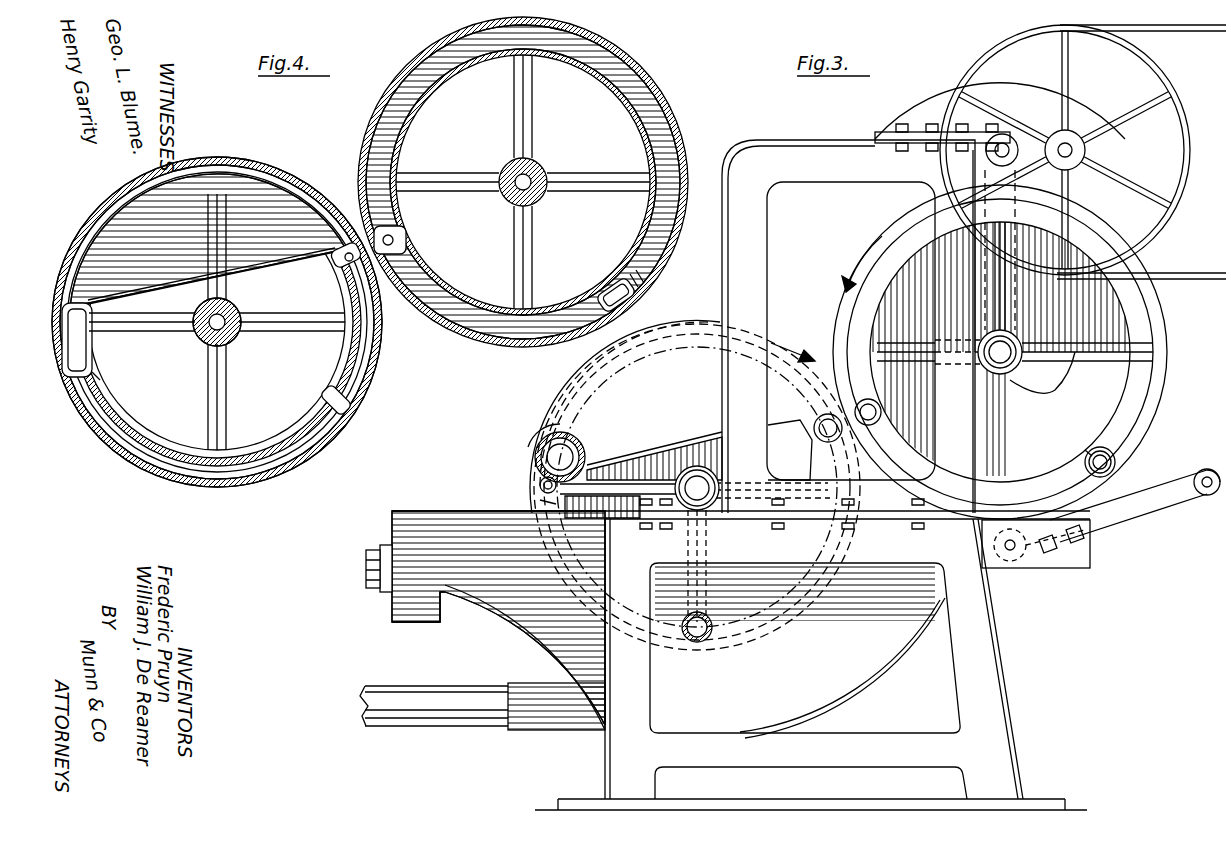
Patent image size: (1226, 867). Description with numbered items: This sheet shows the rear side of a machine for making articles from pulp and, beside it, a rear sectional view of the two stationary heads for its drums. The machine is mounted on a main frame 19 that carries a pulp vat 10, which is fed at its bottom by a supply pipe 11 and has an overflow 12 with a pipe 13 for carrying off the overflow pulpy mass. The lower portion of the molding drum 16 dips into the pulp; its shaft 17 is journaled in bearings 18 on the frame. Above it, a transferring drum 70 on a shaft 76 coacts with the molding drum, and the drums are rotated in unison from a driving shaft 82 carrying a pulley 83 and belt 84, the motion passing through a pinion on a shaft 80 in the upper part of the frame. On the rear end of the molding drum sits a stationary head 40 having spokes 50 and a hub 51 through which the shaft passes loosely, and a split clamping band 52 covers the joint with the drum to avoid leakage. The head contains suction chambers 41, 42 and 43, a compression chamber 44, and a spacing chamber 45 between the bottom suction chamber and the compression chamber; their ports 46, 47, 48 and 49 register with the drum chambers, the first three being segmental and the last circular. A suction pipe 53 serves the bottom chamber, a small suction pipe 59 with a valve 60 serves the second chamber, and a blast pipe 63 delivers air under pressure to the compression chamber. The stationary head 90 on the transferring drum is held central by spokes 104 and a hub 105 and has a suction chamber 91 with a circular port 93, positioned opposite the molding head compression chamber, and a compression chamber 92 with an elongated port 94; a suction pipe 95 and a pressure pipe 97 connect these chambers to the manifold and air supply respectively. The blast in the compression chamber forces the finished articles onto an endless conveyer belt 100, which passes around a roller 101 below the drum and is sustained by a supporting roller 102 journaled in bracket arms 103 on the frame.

In FIG. 3, the pulp vat 10 is at (484, 524).
In FIG. 3, the supply pipe 11 is at (433, 720).
In FIG. 3, the overflow 12 is at (410, 598).
In FIG. 3, the overflow pipe 13 is at (360, 562).
In FIG. 3, the molding drum 16 is at (650, 462).
In FIG. 3, the shaft 17 is at (703, 486).
In FIG. 3, the bearings 18 is at (712, 520).
In FIG. 3, the main frame 19 is at (852, 152).
In FIG. 4, the stationary head 40 is at (281, 171).
In FIG. 3, the stationary head 40 is at (608, 362).
In FIG. 4, the suction chamber 41 is at (272, 467).
In FIG. 4, the suction chamber 42 is at (93, 348).
In FIG. 4, the suction chamber 43 is at (104, 262).
In FIG. 3, the suction chamber 43 is at (648, 375).
In FIG. 4, the compression chamber 44 is at (340, 268).
In FIG. 4, the spacing chamber 45 is at (362, 352).
In FIG. 4, the port 46 is at (231, 466).
In FIG. 3, the port 46 is at (745, 630).
In FIG. 4, the port 47 is at (96, 373).
In FIG. 3, the port 47 is at (536, 504).
In FIG. 4, the port 48 is at (100, 225).
In FIG. 3, the port 48 is at (579, 384).
In FIG. 4, the port 49 is at (316, 262).
In FIG. 3, the port 49 is at (778, 362).
In FIG. 3, the spokes 50 is at (695, 455).
In FIG. 3, the hub 51 is at (706, 472).
In FIG. 3, the split clamping band 52 is at (534, 432).
In FIG. 3, the suction pipe 53 is at (692, 641).
In FIG. 3, the suction pipe 59 is at (540, 483).
In FIG. 3, the valve 60 is at (578, 449).
In FIG. 3, the blast pipe 63 is at (812, 445).
In FIG. 3, the transferring drum 70 is at (1110, 403).
In FIG. 3, the shaft 76 is at (1022, 344).
In FIG. 3, the shaft 80 is at (1000, 142).
In FIG. 3, the driving shaft 82 is at (1088, 150).
In FIG. 3, the pulley 83 is at (1190, 160).
In FIG. 3, the belt 84 is at (1170, 30).
In FIG. 4, the stationary head 90 is at (523, 182).
In FIG. 3, the stationary head 90 is at (1160, 363).
In FIG. 4, the suction chamber 91 is at (402, 232).
In FIG. 4, the compression chamber 92 is at (601, 293).
In FIG. 4, the port 93 is at (395, 240).
In FIG. 4, the port 94 is at (622, 279).
In FIG. 3, the port 94 is at (1094, 453).
In FIG. 3, the suction pipe 95 is at (868, 400).
In FIG. 3, the pipe 97 is at (1110, 450).
In FIG. 3, the endless conveyer belt 100 is at (1206, 476).
In FIG. 3, the roller 101 is at (1014, 552).
In FIG. 3, the supporting roller 102 is at (1208, 497).
In FIG. 3, the bracket arms 103 is at (1122, 516).
In FIG. 4, the spokes 104 is at (518, 128).
In FIG. 3, the spokes 104 is at (1103, 350).
In FIG. 4, the hub 105 is at (520, 157).
In FIG. 3, the hub 105 is at (978, 342).